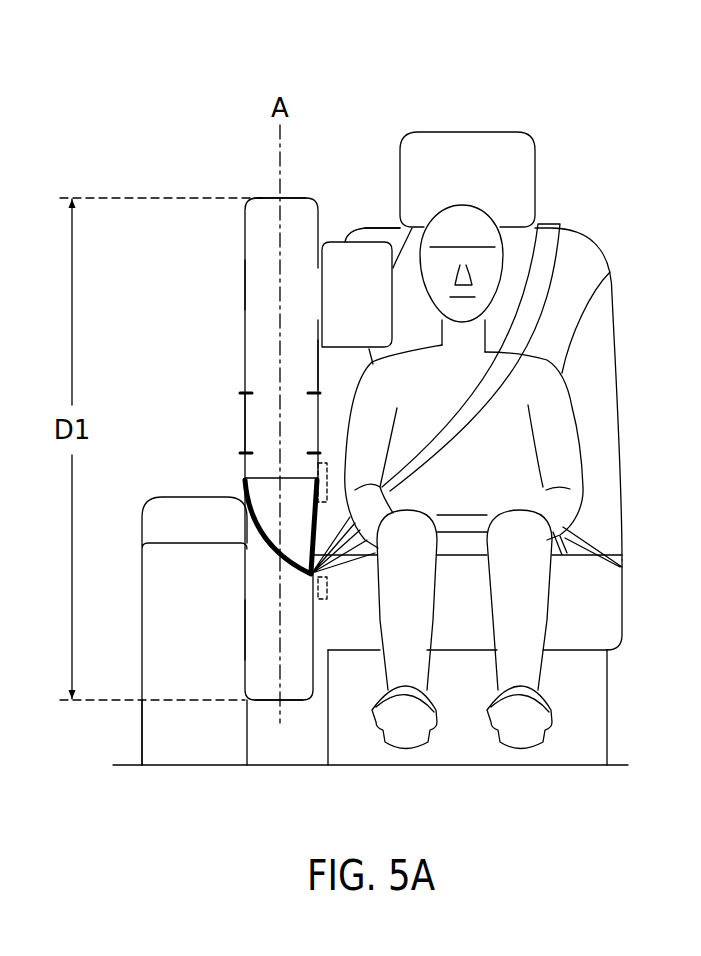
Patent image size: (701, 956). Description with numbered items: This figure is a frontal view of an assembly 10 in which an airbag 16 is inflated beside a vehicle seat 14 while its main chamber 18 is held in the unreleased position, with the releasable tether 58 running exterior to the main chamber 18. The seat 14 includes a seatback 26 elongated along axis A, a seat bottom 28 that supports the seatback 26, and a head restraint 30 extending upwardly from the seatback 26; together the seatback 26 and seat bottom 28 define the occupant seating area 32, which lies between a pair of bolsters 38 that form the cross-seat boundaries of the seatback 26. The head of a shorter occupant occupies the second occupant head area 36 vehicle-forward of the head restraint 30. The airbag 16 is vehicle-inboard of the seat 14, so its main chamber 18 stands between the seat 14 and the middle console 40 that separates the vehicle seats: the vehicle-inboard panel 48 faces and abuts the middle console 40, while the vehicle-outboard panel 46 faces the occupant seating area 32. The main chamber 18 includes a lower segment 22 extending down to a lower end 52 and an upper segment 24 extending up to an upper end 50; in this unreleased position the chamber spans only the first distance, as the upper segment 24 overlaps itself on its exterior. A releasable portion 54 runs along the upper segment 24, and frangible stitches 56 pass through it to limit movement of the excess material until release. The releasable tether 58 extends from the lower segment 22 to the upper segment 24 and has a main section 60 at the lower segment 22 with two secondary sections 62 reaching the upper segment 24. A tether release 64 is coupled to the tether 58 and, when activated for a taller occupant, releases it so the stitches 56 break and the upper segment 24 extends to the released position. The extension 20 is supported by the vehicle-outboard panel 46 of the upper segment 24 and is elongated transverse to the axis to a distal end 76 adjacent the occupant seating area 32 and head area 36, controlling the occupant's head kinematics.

The assembly 10 is at (583, 110).
The vehicle seat 14 is at (608, 262).
The airbag 16 is at (278, 440).
The main chamber 18 is at (262, 253).
The extension 20 is at (357, 265).
The lower segment 22 is at (243, 622).
The upper segment 24 is at (195, 307).
The seatback 26 is at (578, 255).
The seat bottom 28 is at (598, 607).
The head restraint 30 is at (476, 150).
The occupant seating area 32 is at (592, 368).
The second occupant head area 36 is at (512, 250).
The bolsters 38 is at (596, 433).
The middle console 40 is at (160, 572).
The vehicle-outboard panel 46 is at (319, 367).
The vehicle-inboard panel 48 is at (243, 286).
The upper end 50 is at (262, 198).
The lower end 52 is at (270, 703).
The releasable portion 54 is at (218, 422).
The stitches 56 is at (243, 393).
The releasable tether 58 is at (272, 636).
The main section 60 is at (318, 578).
The secondary sections 62 is at (305, 561).
The tether release 64 is at (330, 480).
The distal end 76 is at (410, 228).